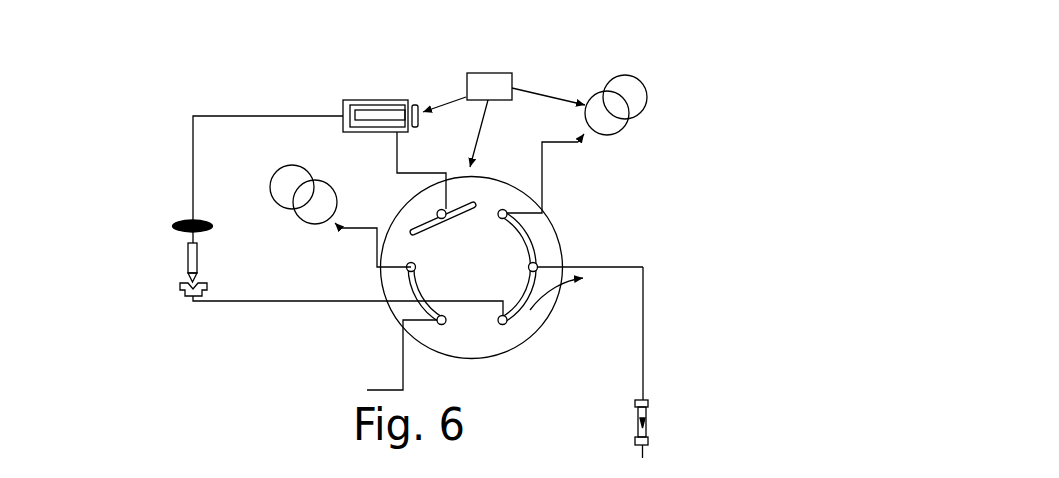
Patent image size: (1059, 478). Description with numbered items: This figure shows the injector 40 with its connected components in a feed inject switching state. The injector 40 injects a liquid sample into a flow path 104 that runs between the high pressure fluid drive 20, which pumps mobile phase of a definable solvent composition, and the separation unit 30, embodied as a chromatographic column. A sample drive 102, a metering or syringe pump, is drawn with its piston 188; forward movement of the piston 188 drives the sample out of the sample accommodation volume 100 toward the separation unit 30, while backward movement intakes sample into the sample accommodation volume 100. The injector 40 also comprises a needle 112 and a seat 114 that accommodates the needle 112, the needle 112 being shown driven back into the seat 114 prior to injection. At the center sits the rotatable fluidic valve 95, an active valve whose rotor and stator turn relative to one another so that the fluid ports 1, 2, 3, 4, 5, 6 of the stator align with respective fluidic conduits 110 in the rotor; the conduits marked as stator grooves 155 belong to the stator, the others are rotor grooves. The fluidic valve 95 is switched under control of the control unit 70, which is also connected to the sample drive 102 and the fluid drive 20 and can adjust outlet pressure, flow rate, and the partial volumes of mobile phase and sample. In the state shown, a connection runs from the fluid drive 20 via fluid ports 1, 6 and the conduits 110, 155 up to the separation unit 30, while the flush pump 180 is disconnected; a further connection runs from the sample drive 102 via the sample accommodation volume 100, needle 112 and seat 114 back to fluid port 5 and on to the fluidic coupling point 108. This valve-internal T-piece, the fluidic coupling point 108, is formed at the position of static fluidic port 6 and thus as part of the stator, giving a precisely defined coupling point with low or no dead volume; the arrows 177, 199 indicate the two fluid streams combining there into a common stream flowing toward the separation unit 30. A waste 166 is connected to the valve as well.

The fluid drive 20 is at (647, 92).
The separation unit 30 is at (648, 411).
The injector 40 is at (166, 152).
The control unit 70 is at (494, 73).
The fluidic valve 95 is at (491, 168).
The sample accommodation volume 100 is at (200, 222).
The sample drive 102 is at (388, 100).
The flow path 104 is at (542, 162).
The fluidic coupling point 108 is at (549, 262).
The fluidic conduits 110 is at (522, 257).
The needle 112 is at (188, 252).
The seat 114 is at (182, 288).
The stator grooves 155 is at (438, 206).
The waste 166 is at (375, 388).
The arrow 177 is at (540, 240).
The flush pump 180 is at (289, 166).
The piston 188 is at (381, 114).
The arrow 199 is at (545, 290).
The fluid port 1 is at (510, 204).
The fluid port 2 is at (439, 200).
The fluid port 3 is at (402, 256).
The fluid port 4 is at (434, 333).
The fluid port 5 is at (506, 334).
The static fluidic port 6 is at (538, 279).